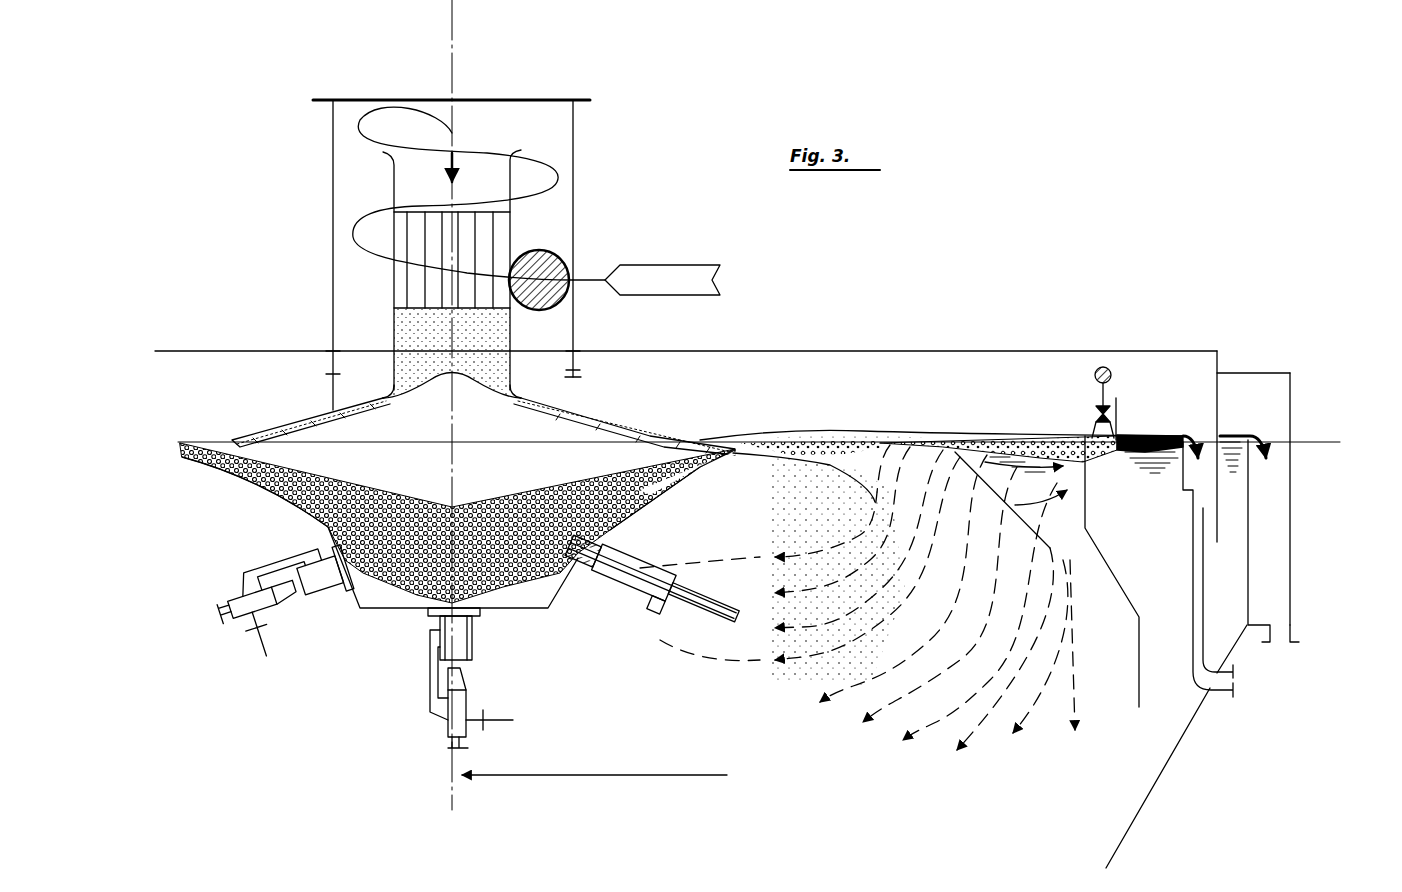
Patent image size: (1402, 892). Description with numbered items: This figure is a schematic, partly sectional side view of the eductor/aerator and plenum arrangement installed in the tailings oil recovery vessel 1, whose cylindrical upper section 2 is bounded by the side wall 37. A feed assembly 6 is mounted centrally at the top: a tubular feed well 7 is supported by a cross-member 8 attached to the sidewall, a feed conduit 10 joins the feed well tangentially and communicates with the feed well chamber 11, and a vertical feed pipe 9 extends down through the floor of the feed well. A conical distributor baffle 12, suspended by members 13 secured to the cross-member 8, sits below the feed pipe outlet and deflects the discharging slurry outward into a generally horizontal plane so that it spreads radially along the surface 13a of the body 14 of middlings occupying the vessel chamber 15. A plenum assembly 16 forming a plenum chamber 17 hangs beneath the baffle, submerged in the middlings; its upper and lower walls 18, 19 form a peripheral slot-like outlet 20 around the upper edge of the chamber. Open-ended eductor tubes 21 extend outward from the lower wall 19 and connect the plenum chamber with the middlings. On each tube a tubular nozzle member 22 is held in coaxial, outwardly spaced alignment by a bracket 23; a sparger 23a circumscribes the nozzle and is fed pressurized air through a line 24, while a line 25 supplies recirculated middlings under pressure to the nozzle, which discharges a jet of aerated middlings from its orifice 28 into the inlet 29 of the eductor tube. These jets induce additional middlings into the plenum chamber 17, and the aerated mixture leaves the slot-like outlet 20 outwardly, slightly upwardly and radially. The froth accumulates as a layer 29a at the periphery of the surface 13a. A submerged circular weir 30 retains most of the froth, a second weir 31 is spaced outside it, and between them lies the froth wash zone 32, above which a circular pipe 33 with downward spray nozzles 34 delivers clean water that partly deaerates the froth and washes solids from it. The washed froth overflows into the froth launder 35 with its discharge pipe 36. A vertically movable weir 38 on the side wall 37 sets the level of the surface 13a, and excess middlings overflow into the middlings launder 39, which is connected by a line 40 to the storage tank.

The tailings oil recovery vessel (TORV) 1 is at (1300, 491).
The cylindrical upper section 2 is at (1250, 557).
The feed assembly 6 is at (580, 203).
The feed well 7 is at (573, 174).
The cross-member 8 is at (581, 370).
The feed pipe 9 is at (394, 311).
The feed conduit 10 is at (563, 262).
The feed well chamber 11 is at (540, 127).
The conical distributor baffle 12 is at (605, 422).
The members 13 is at (330, 378).
The surface of the body of middlings 13a is at (740, 456).
The body of middlings 14 is at (838, 783).
The vessel chamber 15 is at (438, 803).
The plenum assembly 16 is at (408, 618).
The plenum chamber 17 is at (515, 596).
The upper wall 18 is at (565, 483).
The lower wall 19 is at (624, 497).
The slot-like outlet 20 is at (741, 447).
The eductor tube 21 is at (574, 579).
The nozzle member 22 is at (682, 594).
The bracket 23 is at (662, 556).
The sparger 23a is at (606, 647).
The line 24 is at (669, 627).
The line 25 is at (713, 580).
The orifice 28 is at (584, 620).
The inlet 29 is at (636, 545).
The froth layer 29a is at (1022, 440).
The weir 30 is at (1087, 505).
The second weir 31 is at (1118, 416).
The froth wash zone 32 is at (1105, 470).
The circular pipe 33 is at (1094, 377).
The spray nozzles 34 is at (1099, 400).
The froth launder 35 is at (1183, 500).
The discharge pipe 36 is at (1192, 600).
The side wall 37 is at (1250, 514).
The vertically movable weir 38 is at (1250, 468).
The middlings launder 39 is at (1270, 592).
The line 40 is at (1290, 637).